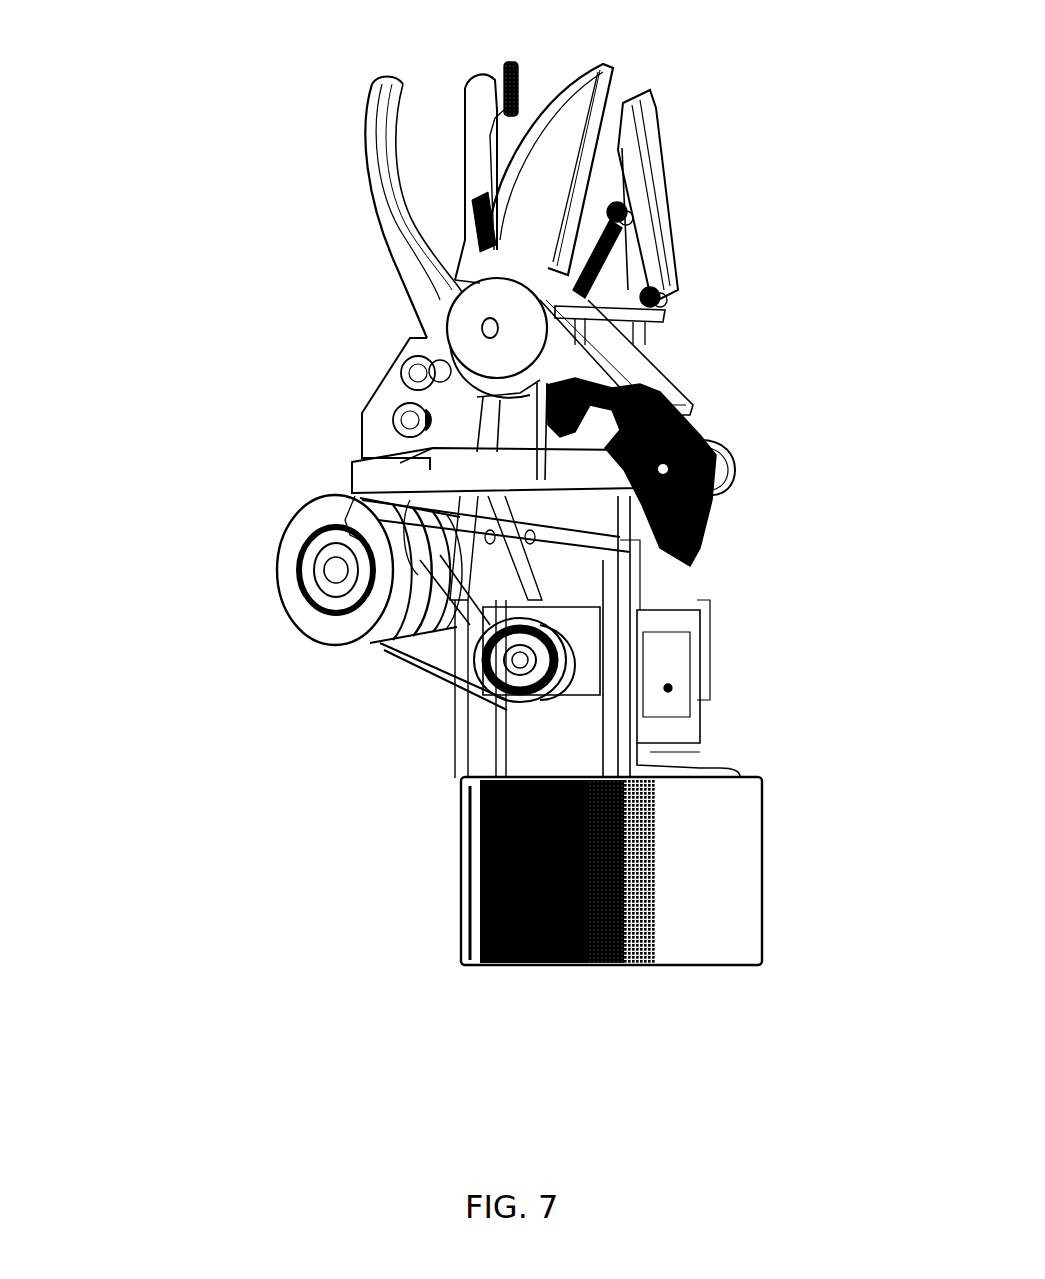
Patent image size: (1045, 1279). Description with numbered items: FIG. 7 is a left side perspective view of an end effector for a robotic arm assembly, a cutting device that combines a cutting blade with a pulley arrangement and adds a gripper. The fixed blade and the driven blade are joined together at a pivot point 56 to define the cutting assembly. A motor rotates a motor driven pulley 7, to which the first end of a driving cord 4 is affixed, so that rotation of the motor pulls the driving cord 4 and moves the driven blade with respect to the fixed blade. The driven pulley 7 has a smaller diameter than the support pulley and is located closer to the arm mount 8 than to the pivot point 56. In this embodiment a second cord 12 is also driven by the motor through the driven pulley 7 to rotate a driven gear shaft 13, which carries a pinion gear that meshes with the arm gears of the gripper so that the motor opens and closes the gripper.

The pivot point 56 is at (488, 328).
The driven gear shaft 13 is at (715, 540).
The second cord 12 is at (483, 593).
The driving cord 4 is at (575, 550).
The motor driven pulley 7 is at (513, 667).
The arm mount 8 is at (713, 826).